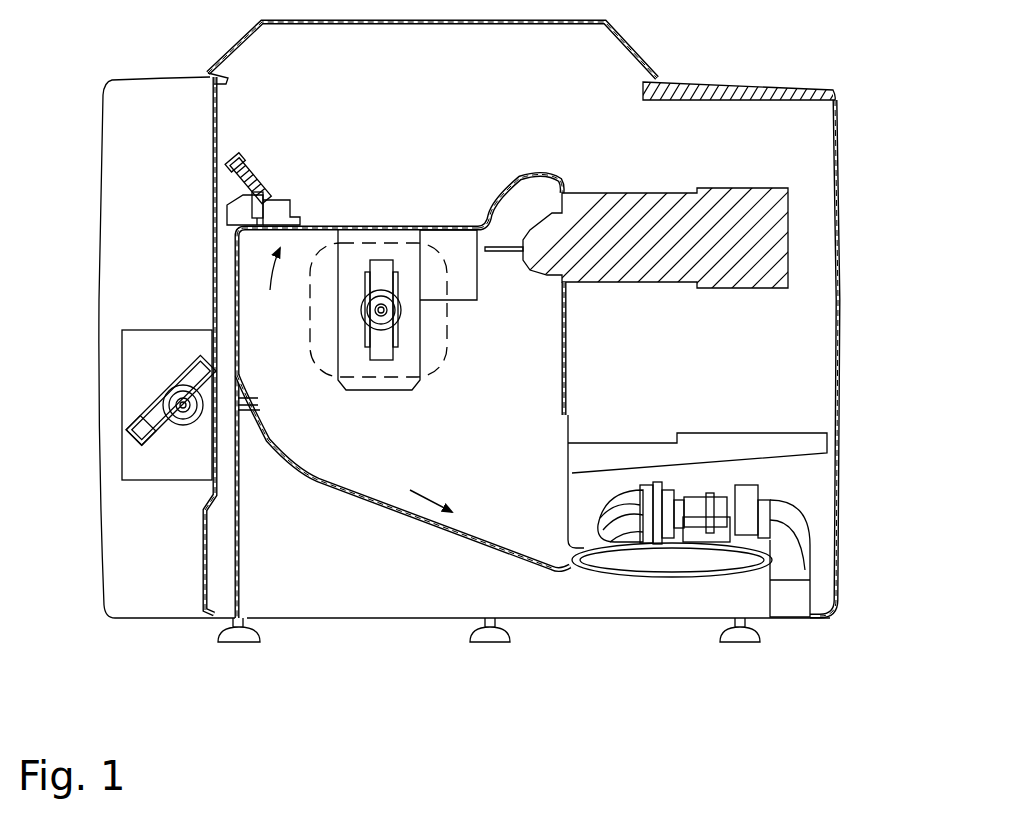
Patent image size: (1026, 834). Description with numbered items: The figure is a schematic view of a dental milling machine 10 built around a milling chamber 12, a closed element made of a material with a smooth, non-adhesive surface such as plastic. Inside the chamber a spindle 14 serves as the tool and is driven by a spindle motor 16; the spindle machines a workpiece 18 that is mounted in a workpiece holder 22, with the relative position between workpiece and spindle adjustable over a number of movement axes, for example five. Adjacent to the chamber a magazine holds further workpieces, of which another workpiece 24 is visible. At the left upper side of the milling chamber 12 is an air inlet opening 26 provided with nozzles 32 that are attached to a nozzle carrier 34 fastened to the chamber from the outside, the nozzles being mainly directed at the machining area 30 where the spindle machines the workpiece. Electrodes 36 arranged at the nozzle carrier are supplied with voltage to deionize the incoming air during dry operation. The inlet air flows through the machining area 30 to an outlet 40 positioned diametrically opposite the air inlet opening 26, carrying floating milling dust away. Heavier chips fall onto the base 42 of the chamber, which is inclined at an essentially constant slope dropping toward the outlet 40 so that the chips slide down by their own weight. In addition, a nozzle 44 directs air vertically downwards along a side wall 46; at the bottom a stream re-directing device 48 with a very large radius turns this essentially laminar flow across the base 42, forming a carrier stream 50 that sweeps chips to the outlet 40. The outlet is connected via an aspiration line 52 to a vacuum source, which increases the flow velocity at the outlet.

The dental milling machine 10 is at (356, 683).
The milling chamber 12 is at (452, 560).
The spindle 14 is at (508, 245).
The spindle motor 16 is at (785, 230).
The workpiece 18 is at (378, 268).
The workpiece holder 22 is at (390, 362).
The another workpiece 24 is at (147, 432).
The air inlet opening 26 is at (266, 282).
The machining area 30 is at (430, 362).
The nozzles 32 is at (278, 198).
The nozzle carrier 34 is at (292, 212).
The electrodes 36 is at (240, 165).
The outlet 40 is at (590, 583).
The base 42 is at (333, 487).
The nozzle 44 is at (240, 212).
The side wall 46 is at (213, 300).
The stream re-directing device 48 is at (264, 407).
The carrier stream 50 is at (432, 495).
The aspiration line 52 is at (790, 522).